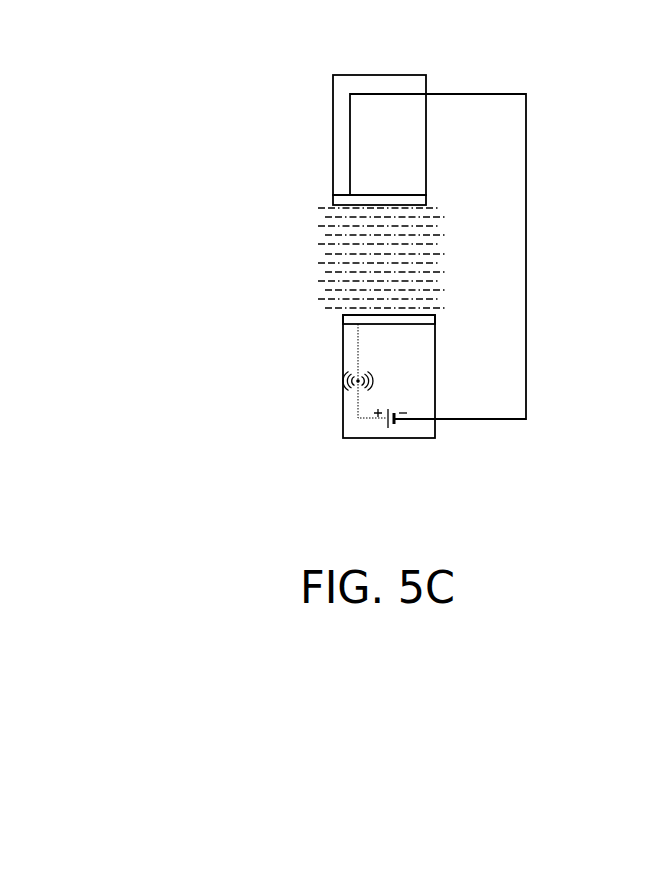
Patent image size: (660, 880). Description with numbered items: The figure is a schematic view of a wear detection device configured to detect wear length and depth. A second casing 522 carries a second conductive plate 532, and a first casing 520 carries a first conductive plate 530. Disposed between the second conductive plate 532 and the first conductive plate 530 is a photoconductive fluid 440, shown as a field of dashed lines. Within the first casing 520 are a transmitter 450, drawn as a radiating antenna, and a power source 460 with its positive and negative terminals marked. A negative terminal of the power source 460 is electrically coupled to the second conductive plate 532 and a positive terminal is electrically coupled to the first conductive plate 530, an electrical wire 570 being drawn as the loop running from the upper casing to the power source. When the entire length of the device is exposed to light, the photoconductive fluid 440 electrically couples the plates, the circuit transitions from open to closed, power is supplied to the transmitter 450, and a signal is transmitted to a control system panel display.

The second casing 522 is at (350, 81).
The second conductive plate 532 is at (341, 202).
The photoconductive fluid 440 is at (348, 257).
The first conductive plate 530 is at (348, 318).
The first casing 520 is at (350, 425).
The transmitter 450 is at (349, 383).
The power source 460 is at (392, 429).
The electrical wire 570 is at (526, 245).